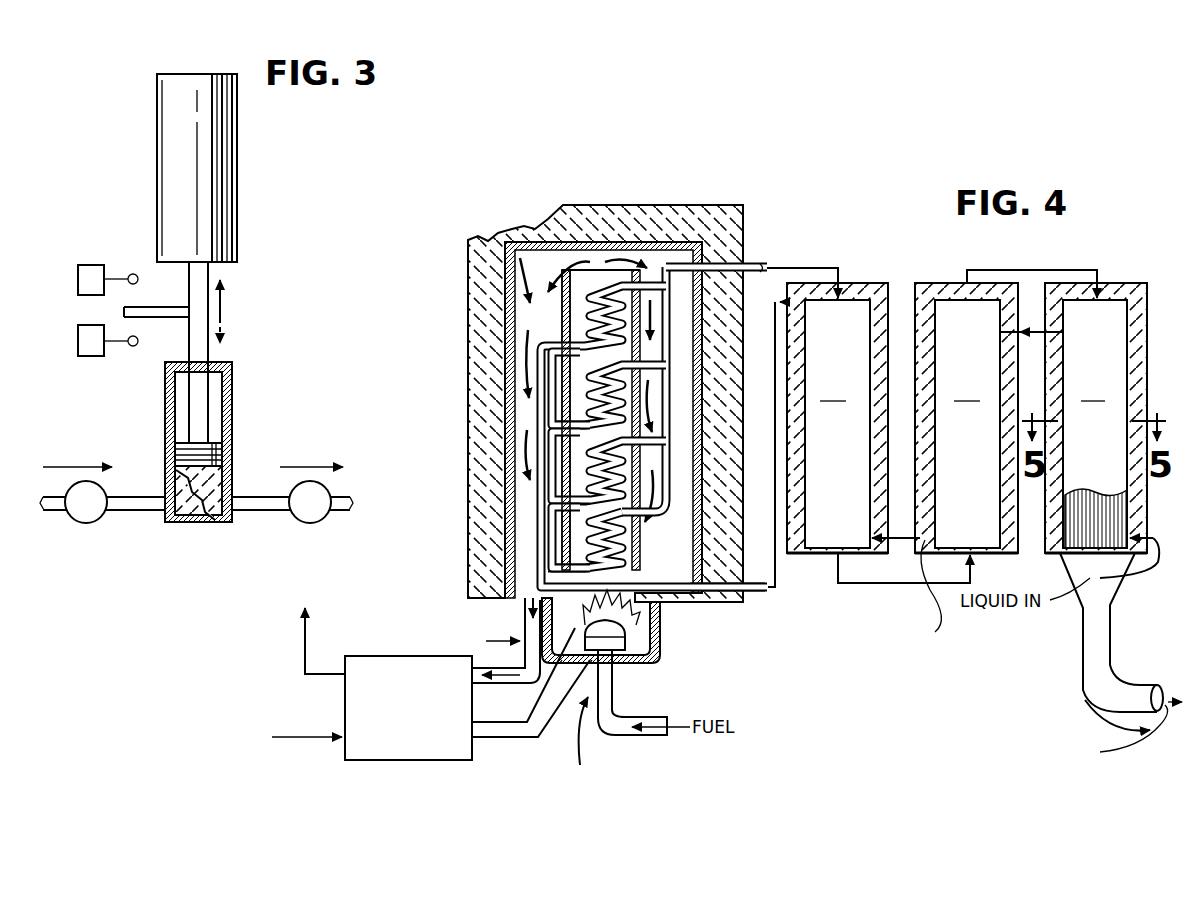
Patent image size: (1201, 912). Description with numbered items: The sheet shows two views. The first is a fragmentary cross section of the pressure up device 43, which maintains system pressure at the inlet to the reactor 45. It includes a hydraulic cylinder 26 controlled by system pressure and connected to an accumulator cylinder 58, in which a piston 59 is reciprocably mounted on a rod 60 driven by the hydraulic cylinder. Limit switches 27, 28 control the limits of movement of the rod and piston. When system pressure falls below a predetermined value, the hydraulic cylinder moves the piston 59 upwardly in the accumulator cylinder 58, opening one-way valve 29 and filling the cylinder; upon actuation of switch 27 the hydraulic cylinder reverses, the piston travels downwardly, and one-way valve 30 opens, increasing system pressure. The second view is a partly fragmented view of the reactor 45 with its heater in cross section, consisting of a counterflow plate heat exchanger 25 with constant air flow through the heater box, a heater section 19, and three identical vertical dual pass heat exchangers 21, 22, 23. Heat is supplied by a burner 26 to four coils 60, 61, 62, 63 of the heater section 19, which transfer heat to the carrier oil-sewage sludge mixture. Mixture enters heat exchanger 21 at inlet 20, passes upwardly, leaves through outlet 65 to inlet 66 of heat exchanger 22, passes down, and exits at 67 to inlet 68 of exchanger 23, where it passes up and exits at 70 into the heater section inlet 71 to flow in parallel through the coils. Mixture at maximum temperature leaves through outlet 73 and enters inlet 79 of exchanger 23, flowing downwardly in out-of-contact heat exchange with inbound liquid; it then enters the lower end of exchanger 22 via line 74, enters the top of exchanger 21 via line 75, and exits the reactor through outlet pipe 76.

In FIG. 4, the heater section 19 is at (584, 427).
In FIG. 4, the inlet 20 is at (1157, 528).
In FIG. 4, the heat exchanger 21 is at (1096, 418).
In FIG. 4, the heat exchanger 22 is at (966, 418).
In FIG. 4, the heat exchanger 23 is at (837, 418).
In FIG. 4, the heat exchanger 25 is at (372, 656).
In FIG. 3, the hydraulic cylinder / burner 26 is at (241, 160).
In FIG. 4, the hydraulic cylinder / burner 26 is at (645, 662).
In FIG. 3, the limit switch 27 is at (80, 280).
In FIG. 3, the limit switch 28 is at (80, 341).
In FIG. 3, the one-way valve 29 is at (100, 516).
In FIG. 3, the one-way valve 30 is at (306, 523).
In FIG. 3, the pressure up device 43 is at (143, 163).
In FIG. 4, the reactor 45 is at (812, 617).
In FIG. 3, the accumulator cylinder 58 is at (233, 395).
In FIG. 3, the piston 59 is at (223, 445).
In FIG. 3, the rod / coil 60 is at (186, 340).
In FIG. 4, the rod / coil 60 is at (557, 318).
In FIG. 4, the coil 61 is at (584, 410).
In FIG. 4, the coil 62 is at (585, 452).
In FIG. 4, the coil 63 is at (585, 540).
In FIG. 4, the outlet 65 is at (1080, 270).
In FIG. 4, the inlet 66 is at (1005, 320).
In FIG. 4, the outlet 67 is at (926, 592).
In FIG. 4, the inlet 68 is at (870, 535).
In FIG. 4, the outlet 70 is at (797, 305).
In FIG. 4, the heater section inlet 71 is at (766, 593).
In FIG. 4, the outlet 73 is at (744, 262).
In FIG. 4, the line 74 is at (905, 583).
In FIG. 4, the line 75 is at (1008, 270).
In FIG. 4, the outlet pipe 76 is at (1085, 683).
In FIG. 4, the inlet 79 is at (838, 268).